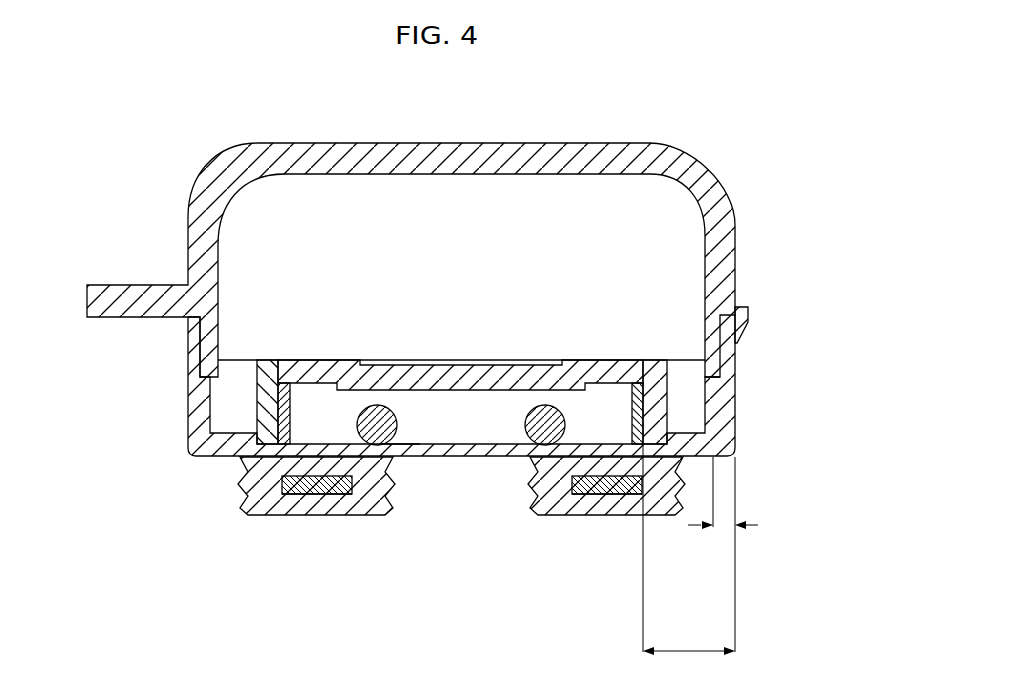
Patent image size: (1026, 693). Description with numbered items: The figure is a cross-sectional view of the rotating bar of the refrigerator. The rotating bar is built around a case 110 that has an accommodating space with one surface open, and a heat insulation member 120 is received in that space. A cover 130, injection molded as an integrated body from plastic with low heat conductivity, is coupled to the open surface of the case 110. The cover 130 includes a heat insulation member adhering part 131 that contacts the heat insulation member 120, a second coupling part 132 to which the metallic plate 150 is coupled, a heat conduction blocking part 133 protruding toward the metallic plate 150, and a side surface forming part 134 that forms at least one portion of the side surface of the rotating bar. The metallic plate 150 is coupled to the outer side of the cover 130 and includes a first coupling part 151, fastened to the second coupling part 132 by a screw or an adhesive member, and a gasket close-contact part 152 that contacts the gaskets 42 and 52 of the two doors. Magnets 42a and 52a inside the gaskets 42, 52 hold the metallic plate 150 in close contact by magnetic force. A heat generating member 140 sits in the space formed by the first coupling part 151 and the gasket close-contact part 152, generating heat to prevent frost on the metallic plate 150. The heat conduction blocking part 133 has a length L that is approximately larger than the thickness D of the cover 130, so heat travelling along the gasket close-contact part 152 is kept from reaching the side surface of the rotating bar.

The case 110 is at (687, 160).
The heat insulation member 120 is at (683, 257).
The cover 130 is at (750, 442).
The heat insulation member adhering part 131 is at (457, 378).
The second coupling part 132 is at (278, 403).
The heat conduction blocking part 133 is at (221, 457).
The side surface forming part 134 is at (193, 395).
The heat generating member 140 is at (525, 432).
The metallic plate 150 is at (527, 432).
The first coupling part 151 is at (333, 493).
The gasket close-contact part 152 is at (397, 447).
The gasket 42 is at (276, 508).
The magnet 42a is at (315, 491).
The gasket 52 is at (655, 507).
The magnet 52a is at (607, 493).
The thickness of the cover D is at (723, 506).
The length of the heat conduction blocking part L is at (689, 564).